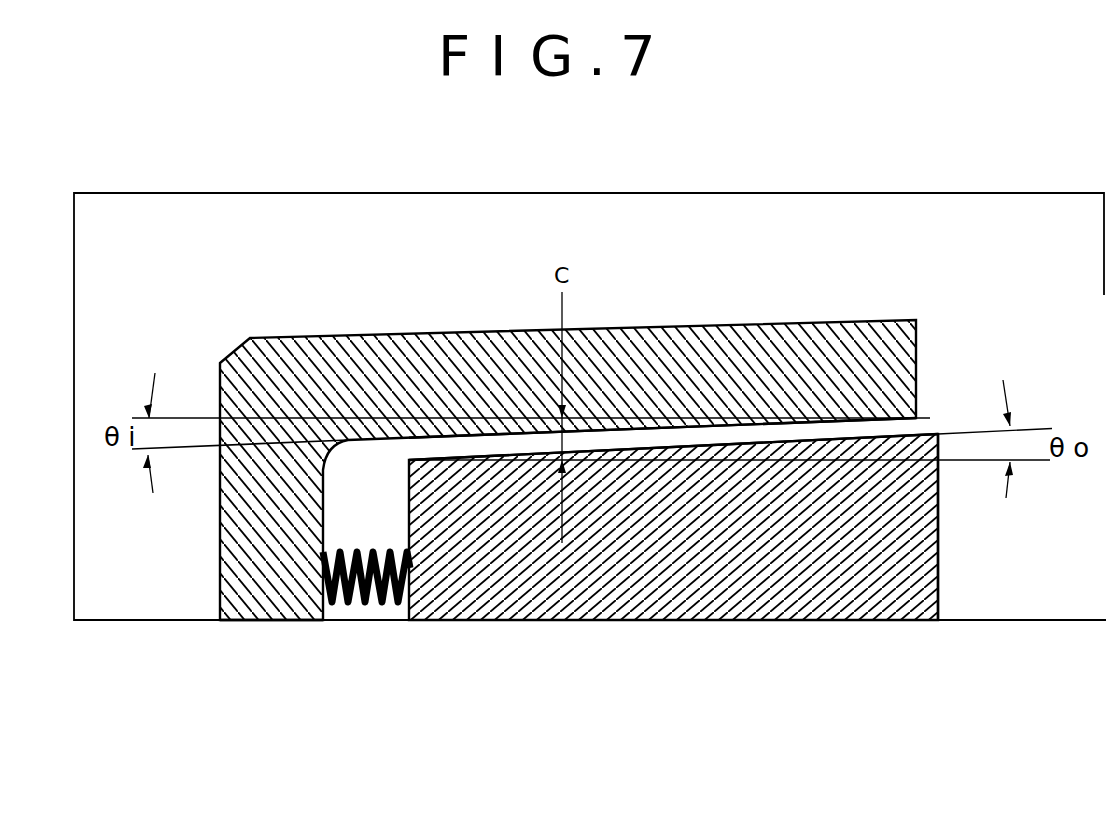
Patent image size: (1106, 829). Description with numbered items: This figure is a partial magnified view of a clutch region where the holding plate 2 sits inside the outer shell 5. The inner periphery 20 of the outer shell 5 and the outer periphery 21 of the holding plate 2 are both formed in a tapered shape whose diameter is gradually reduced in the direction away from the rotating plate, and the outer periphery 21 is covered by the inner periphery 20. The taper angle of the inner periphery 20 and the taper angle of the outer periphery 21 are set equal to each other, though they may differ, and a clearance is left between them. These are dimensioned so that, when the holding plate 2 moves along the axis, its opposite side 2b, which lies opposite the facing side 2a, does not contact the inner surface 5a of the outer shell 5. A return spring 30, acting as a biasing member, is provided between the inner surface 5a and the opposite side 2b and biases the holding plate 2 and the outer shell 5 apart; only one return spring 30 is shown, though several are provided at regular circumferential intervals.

The outer shell 5 is at (363, 338).
The holding plate 2 is at (598, 598).
The outer periphery 21 is at (932, 428).
The inner periphery 20 is at (732, 425).
The return spring 30 is at (369, 550).
The inner surface 5a is at (323, 621).
The opposite side 2b is at (405, 621).
The facing side 2a is at (938, 556).